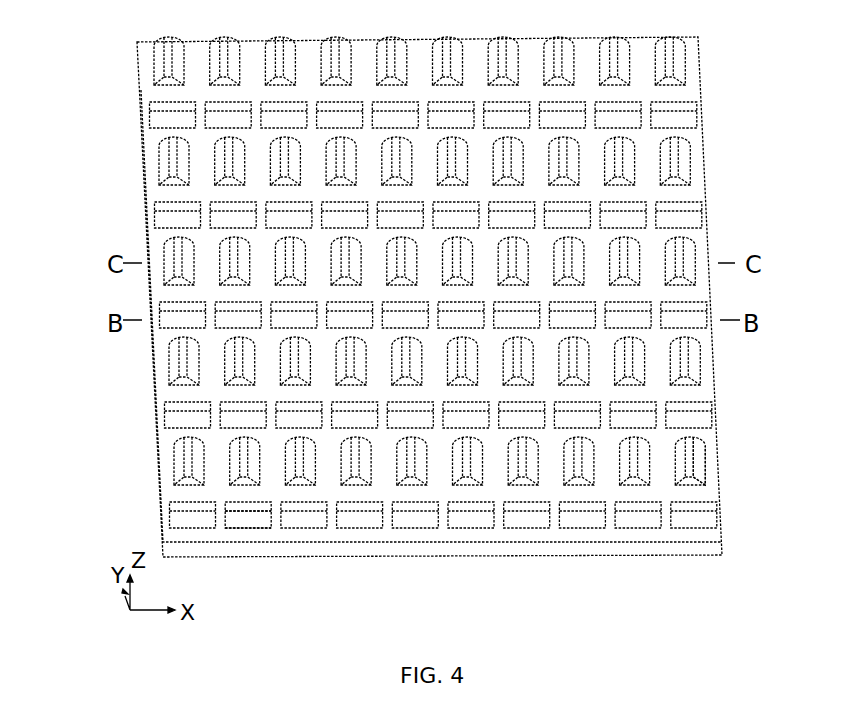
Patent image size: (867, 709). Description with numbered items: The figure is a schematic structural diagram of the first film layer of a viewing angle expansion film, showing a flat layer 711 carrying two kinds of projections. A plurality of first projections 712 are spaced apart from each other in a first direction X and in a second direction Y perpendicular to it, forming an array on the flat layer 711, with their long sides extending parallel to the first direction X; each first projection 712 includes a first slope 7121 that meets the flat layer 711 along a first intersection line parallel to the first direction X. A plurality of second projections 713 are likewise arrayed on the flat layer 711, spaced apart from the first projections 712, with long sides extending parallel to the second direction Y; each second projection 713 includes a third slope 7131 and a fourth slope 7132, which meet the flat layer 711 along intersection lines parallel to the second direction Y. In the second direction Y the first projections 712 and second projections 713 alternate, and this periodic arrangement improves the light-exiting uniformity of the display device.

The flat layer 711 is at (158, 393).
The first projections 712 is at (197, 523).
The second projections 713 is at (193, 458).
The first slope 7121 is at (252, 522).
The third slope 7131 is at (698, 472).
The fourth slope 7132 is at (682, 462).